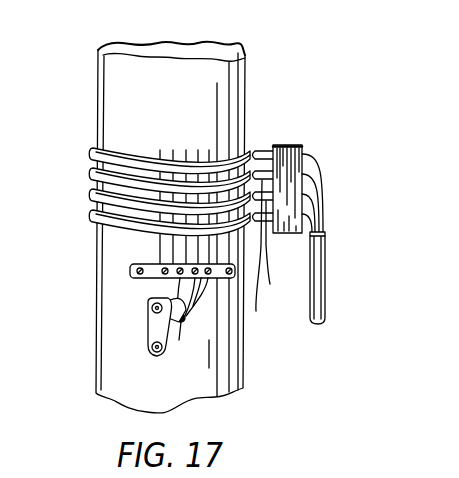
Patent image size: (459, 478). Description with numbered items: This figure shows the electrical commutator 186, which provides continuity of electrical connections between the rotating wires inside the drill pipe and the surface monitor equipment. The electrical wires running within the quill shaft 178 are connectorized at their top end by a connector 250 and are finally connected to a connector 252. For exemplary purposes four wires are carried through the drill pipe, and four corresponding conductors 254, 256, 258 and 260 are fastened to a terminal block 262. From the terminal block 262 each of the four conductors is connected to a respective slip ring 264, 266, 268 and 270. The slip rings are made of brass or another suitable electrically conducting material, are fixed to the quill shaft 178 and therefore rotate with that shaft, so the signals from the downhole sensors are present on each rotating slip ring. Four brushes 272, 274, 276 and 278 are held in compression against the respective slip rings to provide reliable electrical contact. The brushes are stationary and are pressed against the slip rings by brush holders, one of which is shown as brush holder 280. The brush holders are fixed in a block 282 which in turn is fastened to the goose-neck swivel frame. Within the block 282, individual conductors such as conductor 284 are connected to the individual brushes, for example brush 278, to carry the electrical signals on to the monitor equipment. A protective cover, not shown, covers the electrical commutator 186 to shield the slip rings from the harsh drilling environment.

The electrical commutator 186 is at (89, 38).
The quill shaft 178 is at (149, 43).
The slip ring 270 is at (93, 153).
The slip ring 268 is at (93, 174).
The slip ring 266 is at (93, 195).
The slip ring 264 is at (93, 216).
The terminal block 262 is at (157, 262).
The conductor 260 is at (166, 292).
The conductor 258 is at (151, 306).
The conductor 256 is at (196, 284).
The conductor 254 is at (190, 318).
The connector 252 is at (180, 338).
The connector 250 is at (153, 352).
The brush 272 is at (269, 254).
The brush 274 is at (283, 251).
The brush 276 is at (261, 157).
The brush 278 is at (257, 150).
The brush holder 280 is at (267, 153).
The block 282 is at (287, 234).
The conductor 284 is at (323, 165).